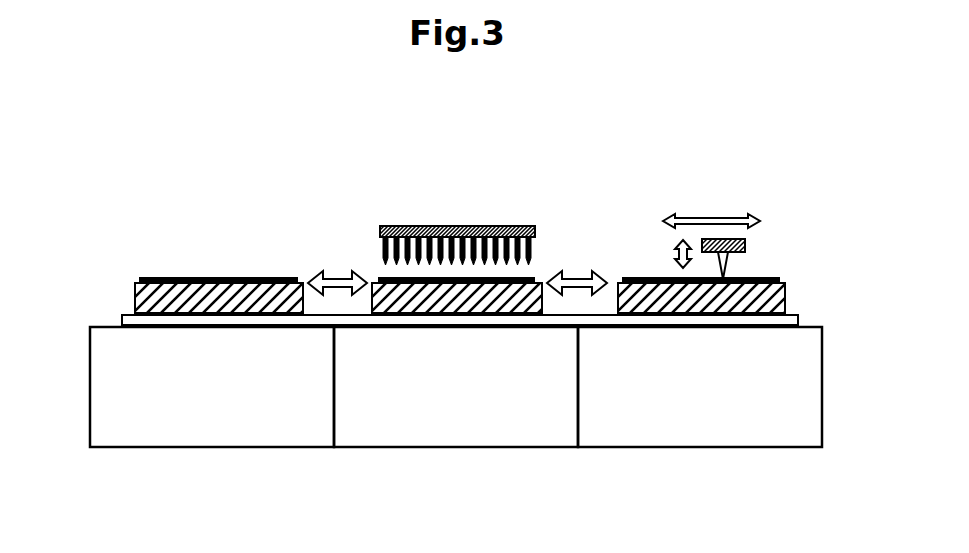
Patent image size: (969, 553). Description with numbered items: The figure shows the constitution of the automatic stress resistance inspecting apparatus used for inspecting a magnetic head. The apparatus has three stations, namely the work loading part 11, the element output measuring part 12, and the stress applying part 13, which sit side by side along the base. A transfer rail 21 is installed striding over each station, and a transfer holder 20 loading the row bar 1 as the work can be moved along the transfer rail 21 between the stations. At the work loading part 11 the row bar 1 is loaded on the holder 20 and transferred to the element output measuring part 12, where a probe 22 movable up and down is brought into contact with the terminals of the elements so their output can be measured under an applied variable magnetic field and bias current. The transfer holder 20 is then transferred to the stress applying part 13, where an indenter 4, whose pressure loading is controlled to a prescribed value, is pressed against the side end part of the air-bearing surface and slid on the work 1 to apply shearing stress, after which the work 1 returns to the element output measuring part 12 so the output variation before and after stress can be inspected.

The row bar 1 is at (227, 277).
The indenter 4 is at (745, 245).
The work loading part 11 is at (222, 433).
The element output measuring part 12 is at (467, 433).
The stress applying part 13 is at (708, 433).
The transfer holder 20 is at (135, 297).
The transfer rail 21 is at (798, 318).
The probe 22 is at (463, 228).